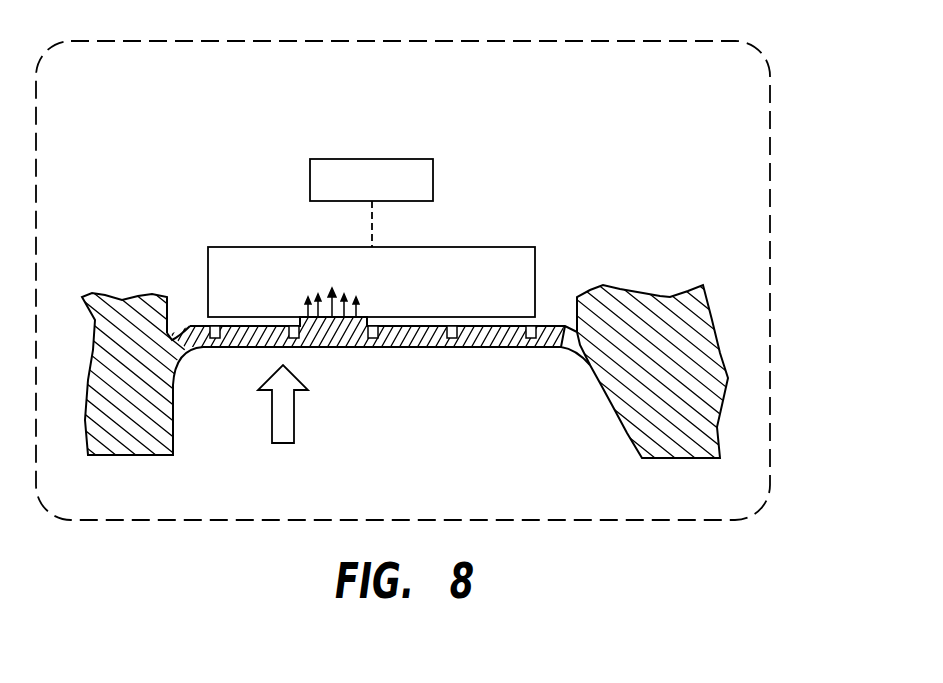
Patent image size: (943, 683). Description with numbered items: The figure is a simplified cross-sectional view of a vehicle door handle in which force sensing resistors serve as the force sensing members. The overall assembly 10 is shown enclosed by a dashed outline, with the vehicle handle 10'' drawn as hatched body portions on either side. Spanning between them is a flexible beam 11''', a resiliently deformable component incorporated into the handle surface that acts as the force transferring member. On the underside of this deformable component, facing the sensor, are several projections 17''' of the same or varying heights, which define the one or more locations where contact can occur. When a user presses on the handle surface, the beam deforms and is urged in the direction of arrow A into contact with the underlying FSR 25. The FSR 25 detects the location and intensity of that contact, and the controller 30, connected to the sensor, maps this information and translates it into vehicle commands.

The sealing system 10 is at (403, 260).
The vehicle handle 10'' is at (191, 398).
The flexible beam 11''' is at (377, 375).
The projections 17''' is at (368, 383).
The force sensing resistor 25 is at (503, 247).
The controller 30 is at (408, 159).
The arrow A is at (283, 420).